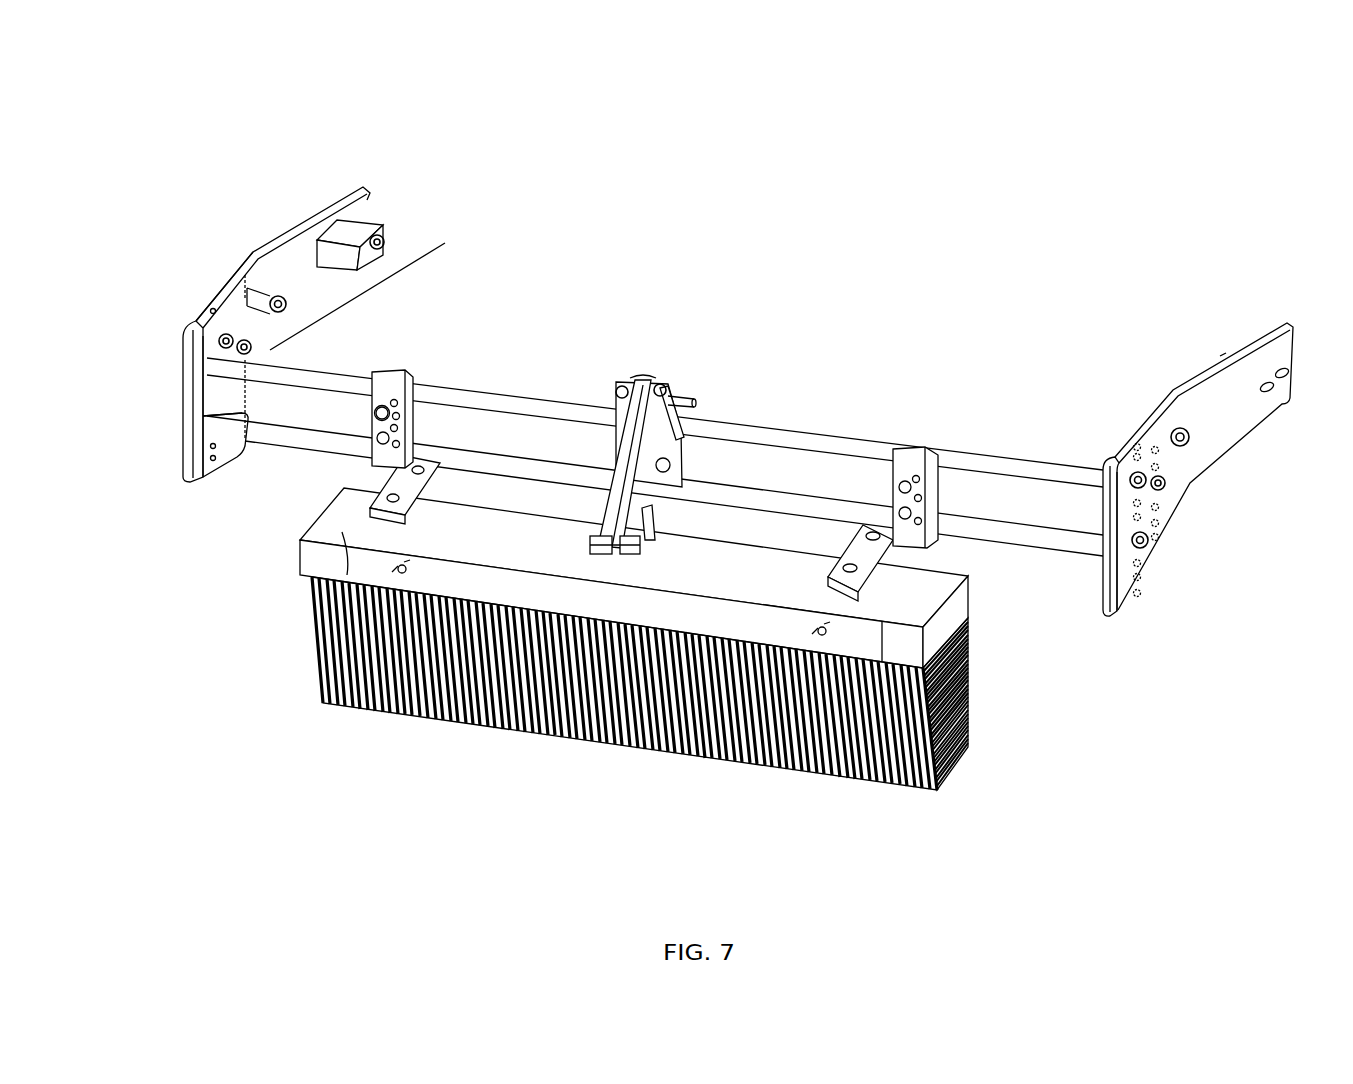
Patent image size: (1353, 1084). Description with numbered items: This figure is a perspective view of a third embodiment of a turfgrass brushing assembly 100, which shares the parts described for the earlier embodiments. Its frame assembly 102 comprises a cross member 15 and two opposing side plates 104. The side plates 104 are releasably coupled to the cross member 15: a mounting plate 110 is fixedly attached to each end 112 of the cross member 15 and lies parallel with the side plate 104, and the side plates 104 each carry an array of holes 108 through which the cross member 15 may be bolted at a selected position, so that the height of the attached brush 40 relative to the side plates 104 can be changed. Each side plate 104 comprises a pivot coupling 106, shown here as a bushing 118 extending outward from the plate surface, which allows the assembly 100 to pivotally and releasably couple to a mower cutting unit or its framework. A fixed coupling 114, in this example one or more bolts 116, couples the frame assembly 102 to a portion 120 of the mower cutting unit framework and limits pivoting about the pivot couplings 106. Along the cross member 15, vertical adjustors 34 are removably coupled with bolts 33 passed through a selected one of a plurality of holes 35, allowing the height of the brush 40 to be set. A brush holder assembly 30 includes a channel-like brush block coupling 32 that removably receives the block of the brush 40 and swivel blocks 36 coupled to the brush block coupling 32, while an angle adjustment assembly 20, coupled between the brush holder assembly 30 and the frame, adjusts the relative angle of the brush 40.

The turfgrass brushing assembly 100 is at (1207, 148).
The frame assembly 102 is at (85, 253).
The side plates 104 is at (343, 197).
The pivot coupling 106 is at (248, 287).
The array of holes 108 is at (210, 321).
The mounting plate 110 is at (215, 349).
The end 112 is at (225, 387).
The fixed coupling 114 is at (412, 221).
The bolts 116 is at (385, 242).
The bushings 118 is at (270, 296).
The portion of the mower cutting unit or its associated framework 120 is at (368, 227).
The cross member 15 is at (303, 376).
The angle adjustment assembly 20 is at (637, 352).
The brush holder assembly 30 is at (1030, 638).
The brush block coupling 32 is at (363, 528).
The bolts 33 is at (400, 411).
The vertical adjustor 34 is at (420, 422).
The plurality of holes 35 is at (920, 498).
The swivel blocks 36 is at (408, 486).
The brush 40 is at (290, 679).